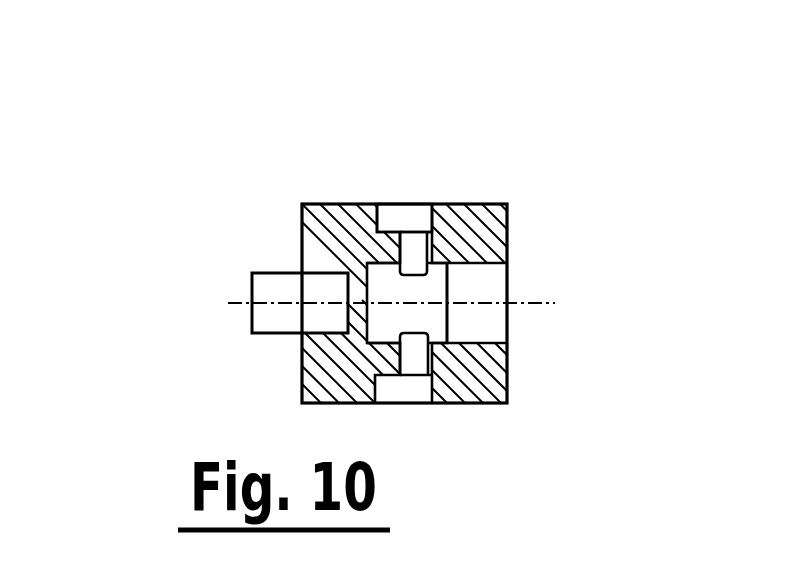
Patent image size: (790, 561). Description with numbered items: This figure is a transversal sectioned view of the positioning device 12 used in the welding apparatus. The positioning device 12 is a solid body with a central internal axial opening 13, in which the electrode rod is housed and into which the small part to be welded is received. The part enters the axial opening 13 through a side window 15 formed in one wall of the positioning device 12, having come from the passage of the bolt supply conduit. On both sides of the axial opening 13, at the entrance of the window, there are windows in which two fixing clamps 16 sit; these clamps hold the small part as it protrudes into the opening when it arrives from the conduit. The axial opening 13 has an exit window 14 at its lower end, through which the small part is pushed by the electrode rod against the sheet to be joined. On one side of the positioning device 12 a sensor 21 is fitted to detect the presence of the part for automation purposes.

The positioning device 12 is at (315, 375).
The internal axial opening 13 is at (383, 276).
The exit window 14 is at (421, 292).
The side window 15 is at (474, 320).
The fixing clamps 16 is at (417, 213).
The sensor 21 is at (270, 287).